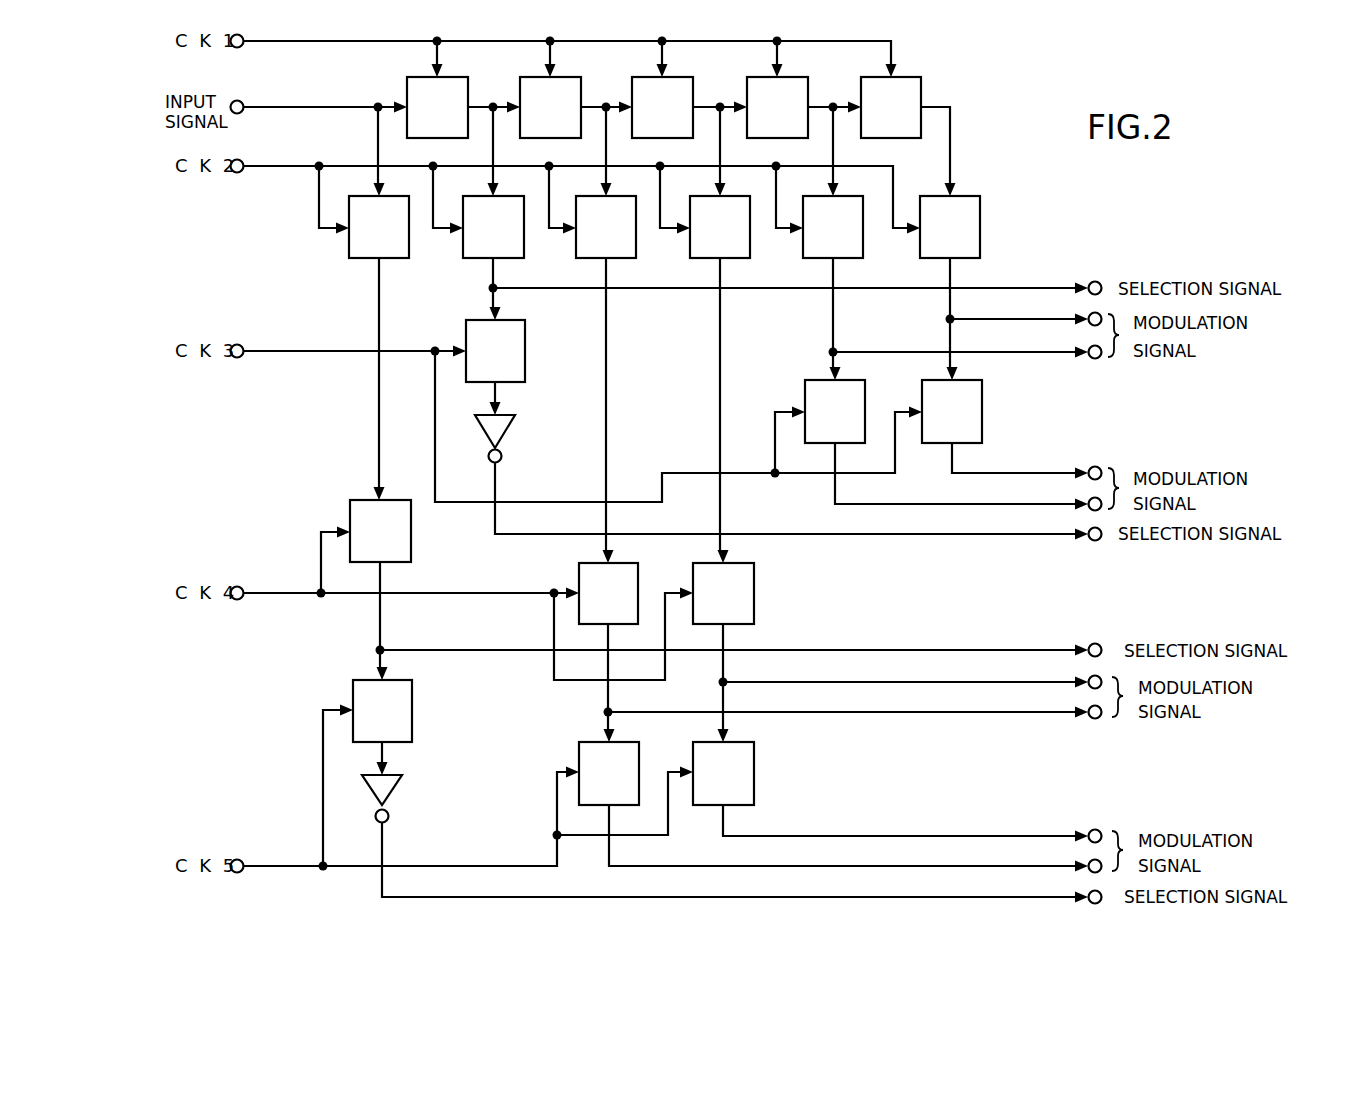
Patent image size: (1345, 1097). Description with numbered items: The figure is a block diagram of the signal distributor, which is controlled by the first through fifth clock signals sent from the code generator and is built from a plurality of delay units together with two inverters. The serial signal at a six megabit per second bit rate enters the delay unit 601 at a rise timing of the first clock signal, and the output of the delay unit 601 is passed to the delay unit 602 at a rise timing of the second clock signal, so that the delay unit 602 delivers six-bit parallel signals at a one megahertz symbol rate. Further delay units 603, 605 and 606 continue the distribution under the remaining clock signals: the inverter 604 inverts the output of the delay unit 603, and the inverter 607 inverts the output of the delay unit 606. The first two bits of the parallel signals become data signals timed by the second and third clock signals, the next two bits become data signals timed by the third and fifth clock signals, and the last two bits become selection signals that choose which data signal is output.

The delay unit 601 is at (697, 92).
The delay unit 602 is at (692, 260).
The delay unit 603 is at (764, 392).
The inverter 604 is at (536, 429).
The delay unit 605 is at (613, 573).
The delay unit 606 is at (601, 754).
The inverter 607 is at (436, 797).